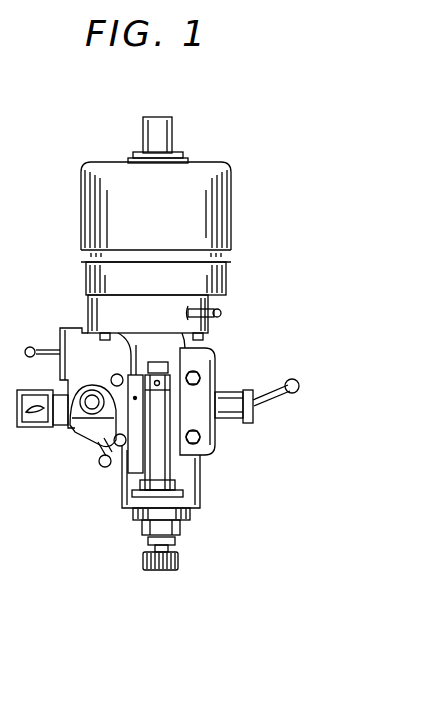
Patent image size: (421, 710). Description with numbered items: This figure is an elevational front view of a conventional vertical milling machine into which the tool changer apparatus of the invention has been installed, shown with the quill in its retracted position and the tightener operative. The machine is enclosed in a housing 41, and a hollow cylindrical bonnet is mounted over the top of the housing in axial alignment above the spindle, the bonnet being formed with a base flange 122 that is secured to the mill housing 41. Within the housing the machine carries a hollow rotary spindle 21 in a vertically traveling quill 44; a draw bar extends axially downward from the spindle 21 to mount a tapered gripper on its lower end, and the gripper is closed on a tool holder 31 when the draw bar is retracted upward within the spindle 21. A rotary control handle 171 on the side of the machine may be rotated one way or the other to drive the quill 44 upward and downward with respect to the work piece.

The base flange 122 is at (232, 211).
The housing 41 is at (237, 248).
The rotary control handle 171 is at (284, 396).
The quill 44 is at (132, 520).
The hollow rotary spindle 21 is at (184, 528).
The tool holder 31 is at (178, 543).